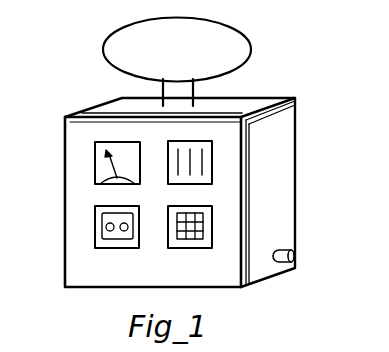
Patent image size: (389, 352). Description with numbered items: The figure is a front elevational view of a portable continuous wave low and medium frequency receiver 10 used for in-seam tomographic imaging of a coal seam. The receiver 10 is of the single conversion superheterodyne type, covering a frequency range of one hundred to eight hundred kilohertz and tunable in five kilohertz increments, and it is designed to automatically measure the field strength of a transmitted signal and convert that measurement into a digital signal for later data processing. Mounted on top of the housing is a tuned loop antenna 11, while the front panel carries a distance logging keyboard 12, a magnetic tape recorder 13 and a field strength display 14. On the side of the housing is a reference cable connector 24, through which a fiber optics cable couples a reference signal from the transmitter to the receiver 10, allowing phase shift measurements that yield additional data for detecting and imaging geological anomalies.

The receiver 10 is at (303, 152).
The tuned loop antenna 11 is at (249, 47).
The distance logging keyboard 12 is at (212, 224).
The magnetic tape recorder 13 is at (95, 232).
The field strength display 14 is at (95, 171).
The reference cable connector 24 is at (281, 263).